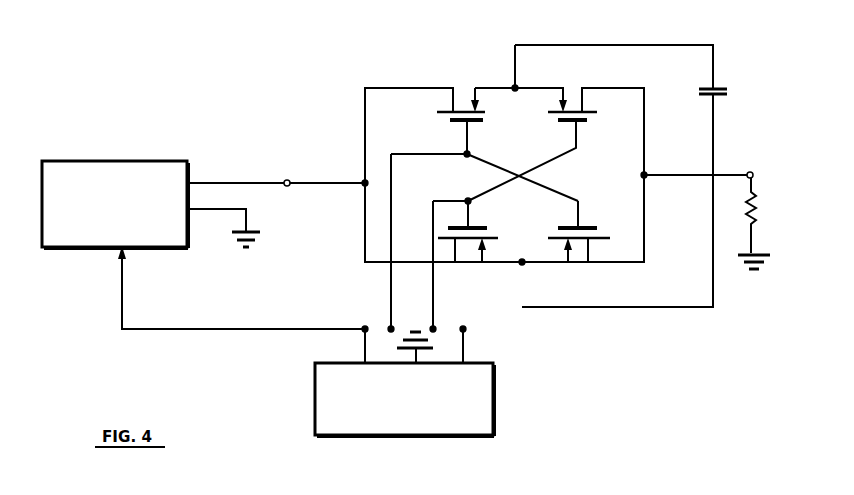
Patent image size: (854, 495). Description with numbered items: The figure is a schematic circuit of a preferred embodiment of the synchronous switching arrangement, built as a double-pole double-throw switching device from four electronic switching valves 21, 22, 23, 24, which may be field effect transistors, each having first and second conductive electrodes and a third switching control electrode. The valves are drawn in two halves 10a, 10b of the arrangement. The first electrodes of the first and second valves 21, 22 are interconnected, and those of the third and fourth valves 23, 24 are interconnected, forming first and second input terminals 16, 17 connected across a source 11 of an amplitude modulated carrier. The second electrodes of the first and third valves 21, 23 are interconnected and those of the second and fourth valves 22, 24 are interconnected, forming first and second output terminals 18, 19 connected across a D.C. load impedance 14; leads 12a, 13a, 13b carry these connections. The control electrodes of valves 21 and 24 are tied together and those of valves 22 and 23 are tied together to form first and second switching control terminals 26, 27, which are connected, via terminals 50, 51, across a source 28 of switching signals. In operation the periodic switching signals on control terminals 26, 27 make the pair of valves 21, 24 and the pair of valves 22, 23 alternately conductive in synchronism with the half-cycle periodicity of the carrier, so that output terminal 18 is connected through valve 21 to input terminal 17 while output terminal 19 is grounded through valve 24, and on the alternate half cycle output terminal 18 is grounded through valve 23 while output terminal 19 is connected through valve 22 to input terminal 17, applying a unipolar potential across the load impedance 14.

The source of an amplitude modulated carrier 11 is at (93, 161).
The first switching circuit half 10a is at (608, 88).
The second switching circuit half 10b is at (433, 88).
The input lead 12a is at (500, 88).
The input lead 13a is at (537, 264).
The input lead 13b is at (537, 88).
The D.C. load impedance 14 is at (724, 89).
The first input terminal 16 is at (750, 172).
The second input terminal 17 is at (287, 186).
The first output terminal 18 is at (519, 89).
The second output terminal 19 is at (522, 260).
The first electronic switching valve 21 is at (436, 112).
The second electronic switching valve 22 is at (494, 226).
The third electronic switching valve 23 is at (582, 124).
The fourth electronic switching valve 24 is at (600, 225).
The first switching control terminal 26 is at (390, 324).
The second switching control terminal 27 is at (434, 325).
The source of switching signals 28 is at (463, 403).
The source output terminal 50 is at (362, 331).
The source output terminal 51 is at (466, 331).